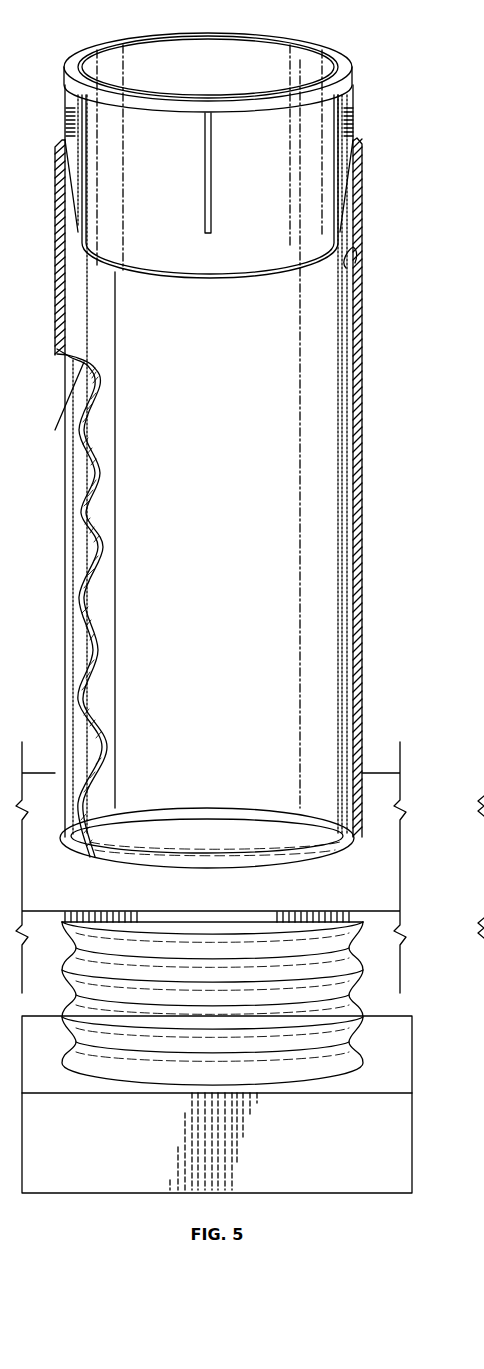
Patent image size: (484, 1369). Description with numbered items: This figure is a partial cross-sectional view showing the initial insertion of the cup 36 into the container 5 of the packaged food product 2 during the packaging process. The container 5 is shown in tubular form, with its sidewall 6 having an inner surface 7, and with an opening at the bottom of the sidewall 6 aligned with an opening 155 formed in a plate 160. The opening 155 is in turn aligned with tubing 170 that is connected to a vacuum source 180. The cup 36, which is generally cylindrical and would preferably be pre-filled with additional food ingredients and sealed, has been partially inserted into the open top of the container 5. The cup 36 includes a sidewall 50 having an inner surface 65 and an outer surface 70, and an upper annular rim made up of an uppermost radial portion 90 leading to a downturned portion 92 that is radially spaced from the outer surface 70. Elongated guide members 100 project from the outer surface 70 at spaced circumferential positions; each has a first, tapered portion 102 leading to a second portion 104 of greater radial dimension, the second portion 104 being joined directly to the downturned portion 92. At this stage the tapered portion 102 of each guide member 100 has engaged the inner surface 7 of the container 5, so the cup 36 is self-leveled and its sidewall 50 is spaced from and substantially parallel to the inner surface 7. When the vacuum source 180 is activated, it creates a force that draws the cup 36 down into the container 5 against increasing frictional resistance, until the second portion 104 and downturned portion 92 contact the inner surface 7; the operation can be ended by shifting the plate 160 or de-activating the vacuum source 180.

The packaged food product 2 is at (345, 33).
The container 5 is at (362, 205).
The sidewall 6 is at (363, 230).
The inner surface 7 is at (346, 268).
The cup 36 is at (347, 59).
The sidewall 50 is at (100, 203).
The inner surface 65 is at (218, 83).
The outer surface 70 is at (180, 204).
The uppermost radial portion 90 is at (80, 51).
The downturned portion 92 is at (353, 82).
The guide member 100 is at (210, 163).
The first, tapered portion 102 is at (65, 172).
The second portion 104 is at (63, 107).
The opening 155 is at (180, 843).
The plate 160 is at (375, 780).
The tubing 170 is at (348, 996).
The vacuum source 180 is at (395, 1118).